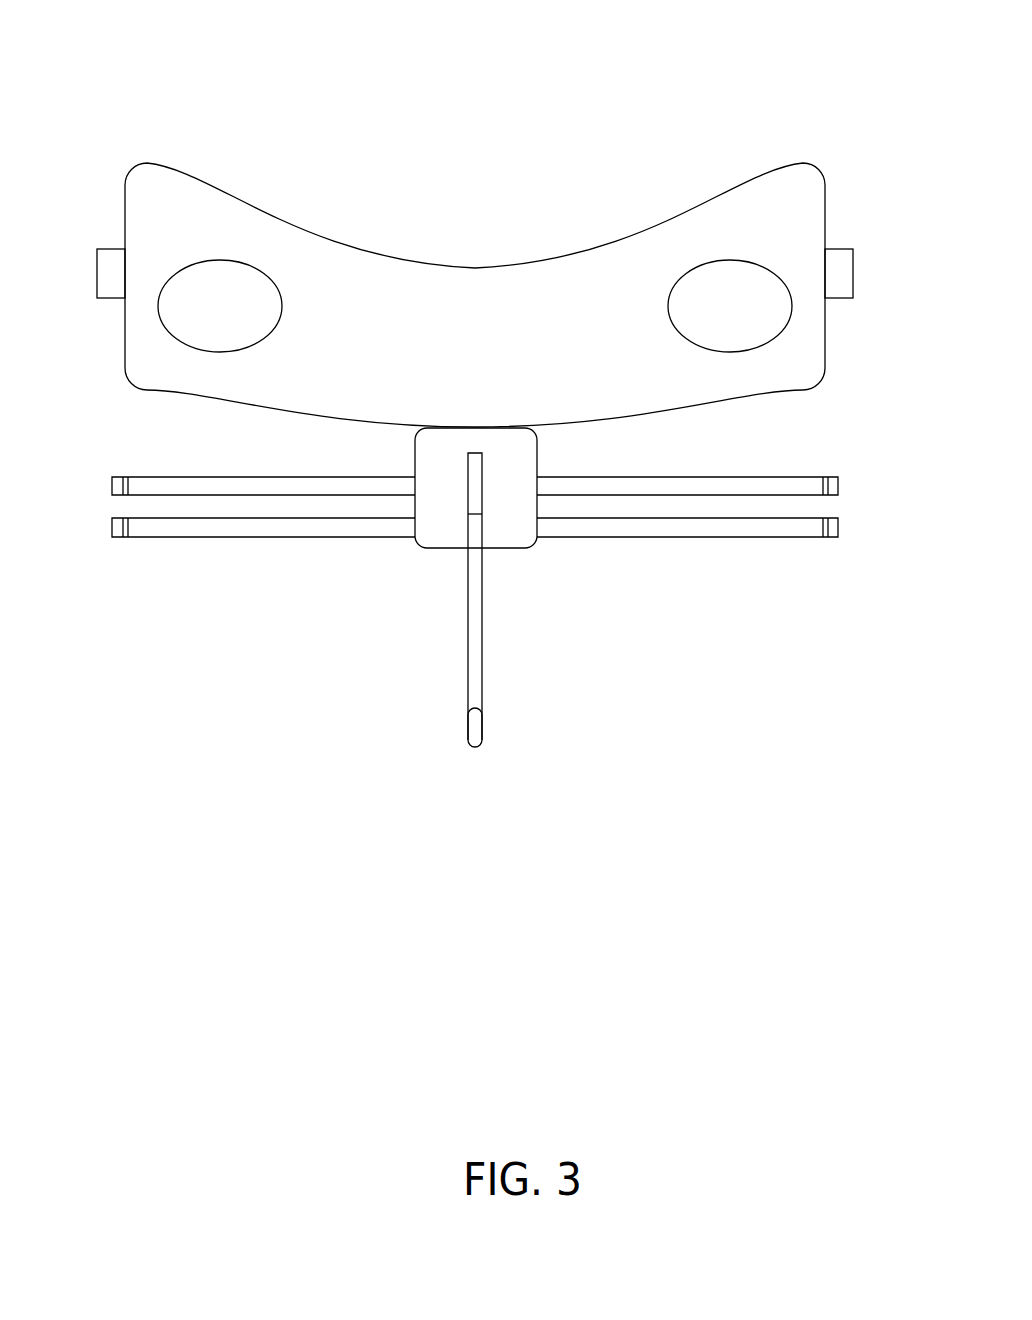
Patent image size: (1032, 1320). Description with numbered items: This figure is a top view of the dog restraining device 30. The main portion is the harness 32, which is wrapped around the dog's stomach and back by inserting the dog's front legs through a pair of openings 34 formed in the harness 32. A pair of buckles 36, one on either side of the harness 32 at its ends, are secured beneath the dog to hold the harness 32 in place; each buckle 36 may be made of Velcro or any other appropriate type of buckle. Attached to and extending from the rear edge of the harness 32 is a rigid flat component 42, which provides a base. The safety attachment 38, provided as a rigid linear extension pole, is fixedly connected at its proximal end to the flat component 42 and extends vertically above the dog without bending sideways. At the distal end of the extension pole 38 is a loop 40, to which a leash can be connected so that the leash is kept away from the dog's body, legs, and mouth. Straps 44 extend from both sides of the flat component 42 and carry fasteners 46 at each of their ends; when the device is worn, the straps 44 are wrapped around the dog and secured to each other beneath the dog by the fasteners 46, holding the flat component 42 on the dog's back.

The dog restraining device 30 is at (617, 100).
The harness 32 is at (452, 268).
The openings 34 is at (235, 289).
The buckles 36 is at (97, 263).
The safety attachment 38 is at (470, 643).
The loop 40 is at (468, 740).
The flat component 42 is at (440, 548).
The straps 44 is at (228, 537).
The fasteners 46 is at (112, 527).